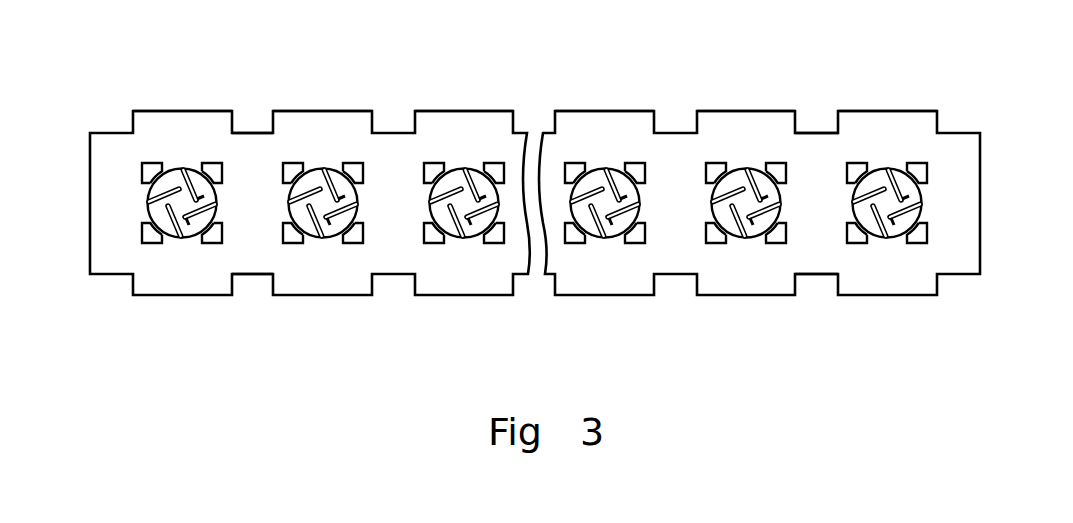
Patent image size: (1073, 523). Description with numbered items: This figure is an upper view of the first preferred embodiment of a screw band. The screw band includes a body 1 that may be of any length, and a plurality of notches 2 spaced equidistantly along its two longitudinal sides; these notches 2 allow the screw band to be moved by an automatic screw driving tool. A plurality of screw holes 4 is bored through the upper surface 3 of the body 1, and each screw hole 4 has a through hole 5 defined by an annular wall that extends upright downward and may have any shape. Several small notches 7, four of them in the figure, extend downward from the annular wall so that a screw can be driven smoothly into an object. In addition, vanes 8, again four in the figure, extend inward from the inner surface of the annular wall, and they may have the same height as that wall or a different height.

The body 1 is at (985, 242).
The notches 2 is at (250, 123).
The upper surface 3 is at (180, 123).
The screw holes 4 is at (312, 165).
The through hole 5 is at (182, 208).
The small notches 7 is at (290, 168).
The vanes 8 is at (342, 192).